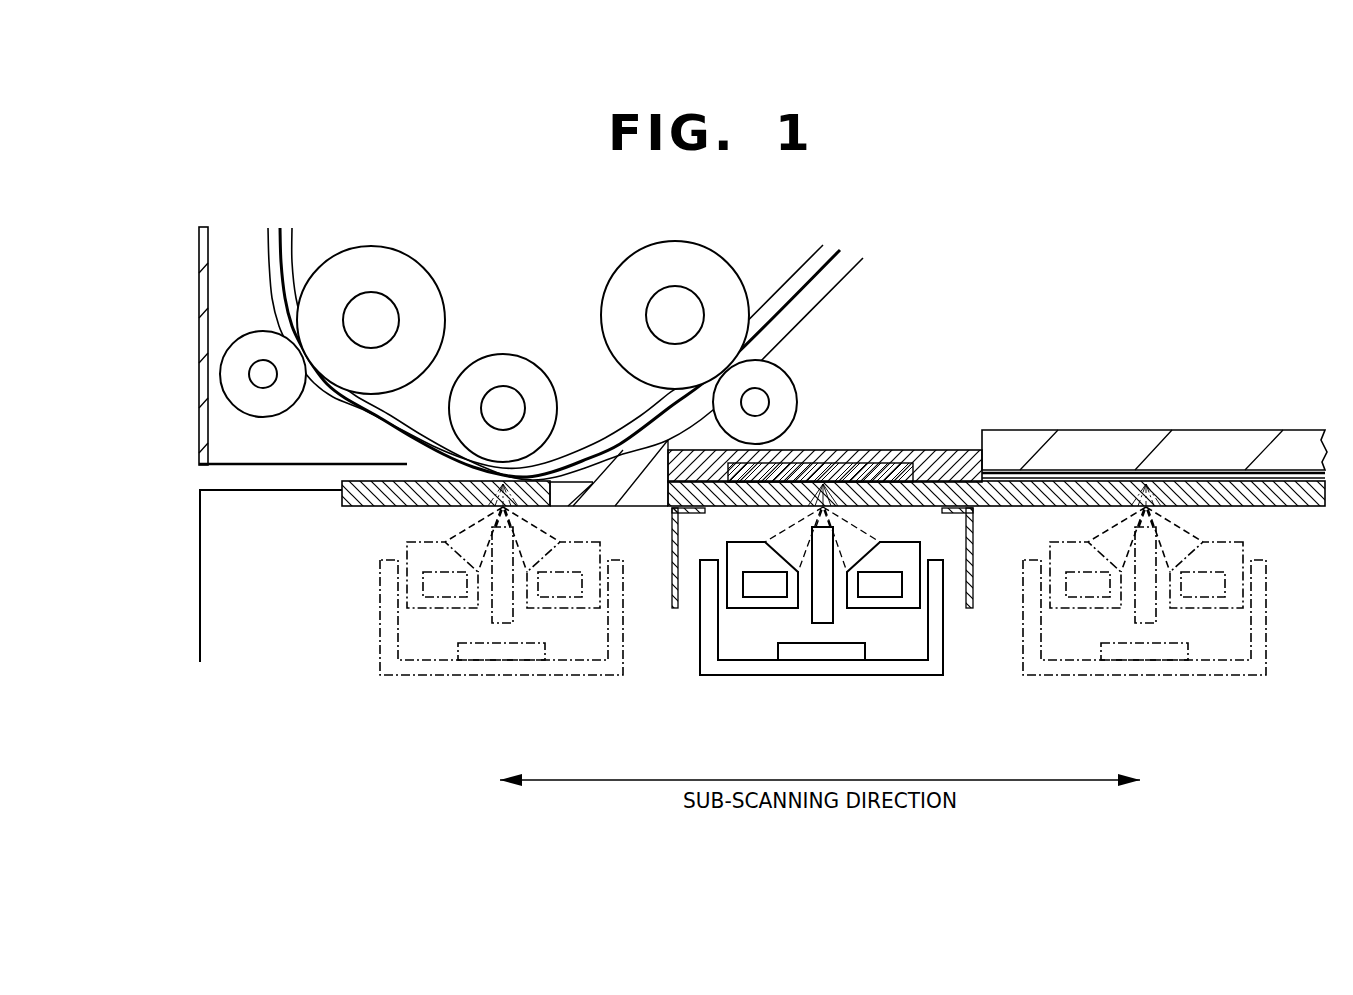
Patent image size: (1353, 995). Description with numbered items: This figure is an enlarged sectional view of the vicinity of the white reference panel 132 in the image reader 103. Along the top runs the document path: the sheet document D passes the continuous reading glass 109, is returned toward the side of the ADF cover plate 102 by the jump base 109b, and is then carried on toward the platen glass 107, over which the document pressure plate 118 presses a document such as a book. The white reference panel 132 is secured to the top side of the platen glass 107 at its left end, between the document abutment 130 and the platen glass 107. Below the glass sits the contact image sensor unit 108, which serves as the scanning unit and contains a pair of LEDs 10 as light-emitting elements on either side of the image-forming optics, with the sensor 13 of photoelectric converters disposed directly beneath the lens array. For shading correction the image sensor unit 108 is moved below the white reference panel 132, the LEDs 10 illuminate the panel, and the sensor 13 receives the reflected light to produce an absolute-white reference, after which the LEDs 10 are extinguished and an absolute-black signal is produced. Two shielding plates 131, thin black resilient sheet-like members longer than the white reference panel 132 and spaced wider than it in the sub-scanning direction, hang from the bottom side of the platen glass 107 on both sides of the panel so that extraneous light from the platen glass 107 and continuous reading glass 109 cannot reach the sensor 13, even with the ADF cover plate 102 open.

The cover plate 102 is at (199, 362).
The image reader 103 is at (200, 613).
The continuous reading glass 109 is at (350, 506).
The jump base 109b is at (612, 486).
The platen glass 107 is at (1058, 492).
The document abutment 130 is at (830, 450).
The white reference panel 132 is at (910, 464).
The document pressure plate 118 is at (1156, 431).
The shielding plates 131 is at (675, 590).
The LEDs 10 is at (765, 594).
The contact image sensor unit 108 is at (773, 668).
The sensor 13 is at (843, 658).
The sheet document D is at (784, 306).